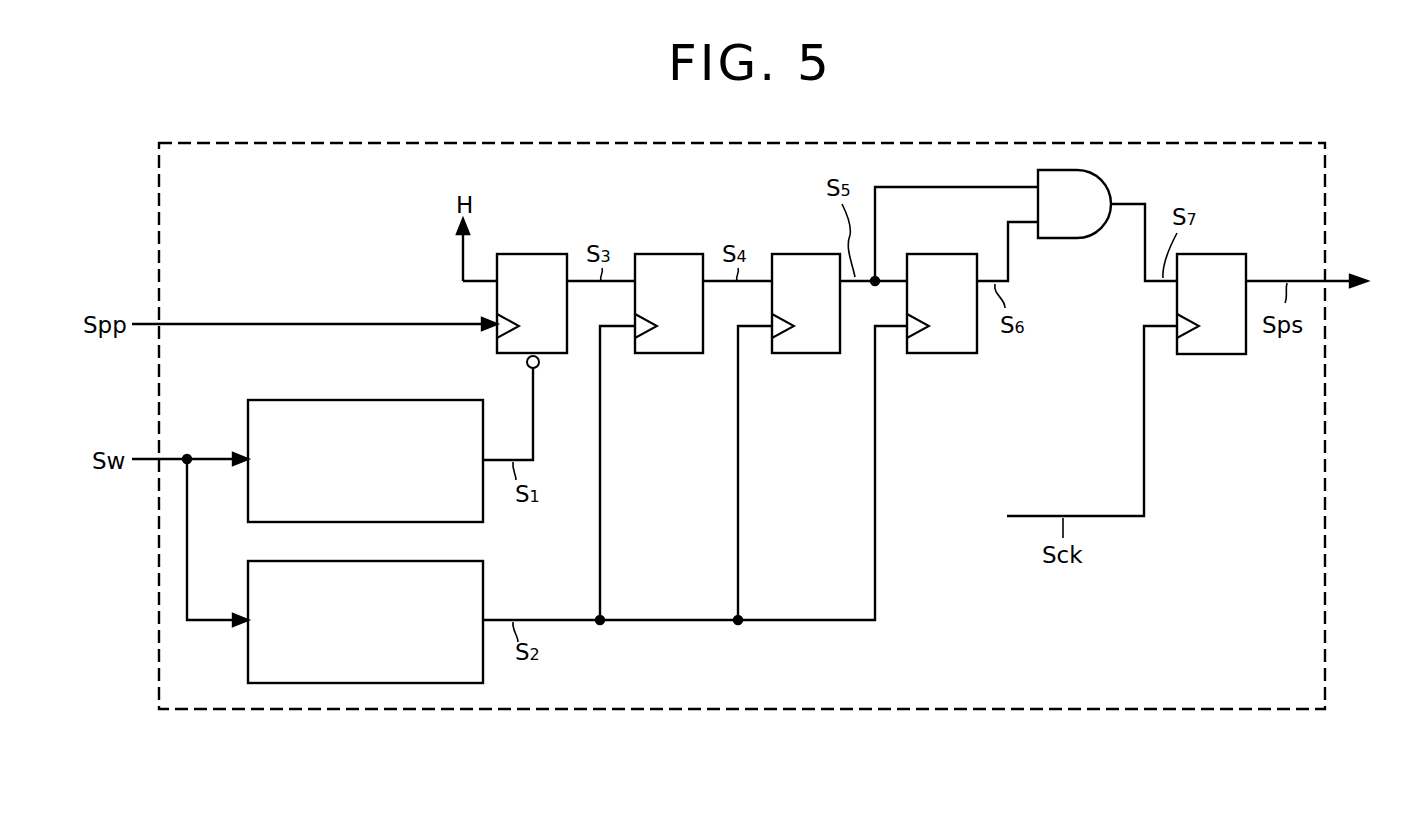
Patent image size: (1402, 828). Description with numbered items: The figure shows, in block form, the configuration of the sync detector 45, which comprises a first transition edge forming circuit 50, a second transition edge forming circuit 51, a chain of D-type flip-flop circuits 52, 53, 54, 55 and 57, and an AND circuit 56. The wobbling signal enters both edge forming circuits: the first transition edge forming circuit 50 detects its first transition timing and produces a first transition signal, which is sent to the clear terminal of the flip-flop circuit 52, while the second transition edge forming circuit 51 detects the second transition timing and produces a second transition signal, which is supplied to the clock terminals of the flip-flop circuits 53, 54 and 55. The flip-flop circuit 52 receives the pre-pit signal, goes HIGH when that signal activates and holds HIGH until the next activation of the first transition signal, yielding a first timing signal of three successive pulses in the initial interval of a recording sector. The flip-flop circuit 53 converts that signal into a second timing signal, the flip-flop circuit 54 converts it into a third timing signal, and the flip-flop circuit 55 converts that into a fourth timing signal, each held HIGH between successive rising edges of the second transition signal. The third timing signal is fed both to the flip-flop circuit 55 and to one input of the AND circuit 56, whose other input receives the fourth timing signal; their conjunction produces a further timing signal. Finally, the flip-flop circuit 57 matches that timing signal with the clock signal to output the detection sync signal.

The sync detector 45 is at (1325, 206).
The first transition edge forming circuit 50 is at (408, 400).
The second transition edge forming circuit 51 is at (483, 574).
The D-type flip-flop circuit 52 is at (532, 253).
The D-type flip-flop circuit 53 is at (670, 253).
The D-type flip-flop circuit 54 is at (806, 254).
The D-type flip-flop circuit 55 is at (942, 254).
The AND circuit 56 is at (1077, 238).
The D-type flip-flop circuit 57 is at (1214, 354).